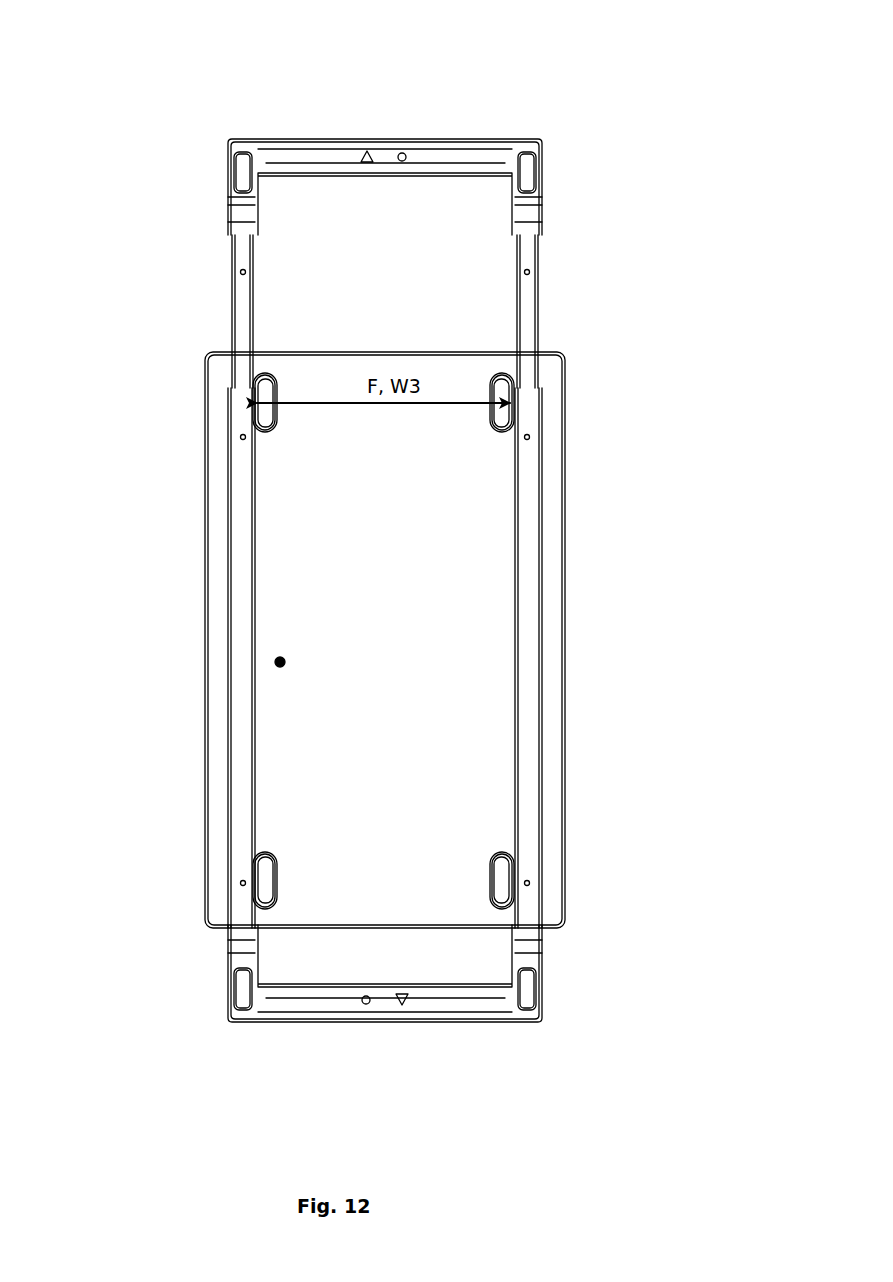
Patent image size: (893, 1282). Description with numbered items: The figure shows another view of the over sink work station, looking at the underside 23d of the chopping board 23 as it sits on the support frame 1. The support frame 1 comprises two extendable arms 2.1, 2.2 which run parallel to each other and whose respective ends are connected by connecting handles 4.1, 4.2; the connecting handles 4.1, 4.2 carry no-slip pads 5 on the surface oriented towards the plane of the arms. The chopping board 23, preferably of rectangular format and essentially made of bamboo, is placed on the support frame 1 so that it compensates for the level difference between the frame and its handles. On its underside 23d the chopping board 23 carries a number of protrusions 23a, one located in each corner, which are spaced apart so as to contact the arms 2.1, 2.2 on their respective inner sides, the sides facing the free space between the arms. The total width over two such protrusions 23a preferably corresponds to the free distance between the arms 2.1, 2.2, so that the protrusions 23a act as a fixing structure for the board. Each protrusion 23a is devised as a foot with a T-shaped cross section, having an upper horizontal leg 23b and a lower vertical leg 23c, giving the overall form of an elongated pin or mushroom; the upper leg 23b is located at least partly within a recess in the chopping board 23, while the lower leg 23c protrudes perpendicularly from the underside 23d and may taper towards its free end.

The support frame 1 is at (584, 221).
The extendable arm 2.1 is at (218, 602).
The extendable arm 2.2 is at (550, 644).
The connecting handle 4.1 is at (447, 160).
The connecting handle 4.2 is at (290, 1013).
The no-slip pad 5 is at (243, 168).
The chopping board 23 is at (569, 512).
The protrusion 23a is at (480, 391).
The upper horizontal leg 23b is at (270, 432).
The lower vertical leg 23c is at (265, 412).
The underside 23d is at (280, 662).